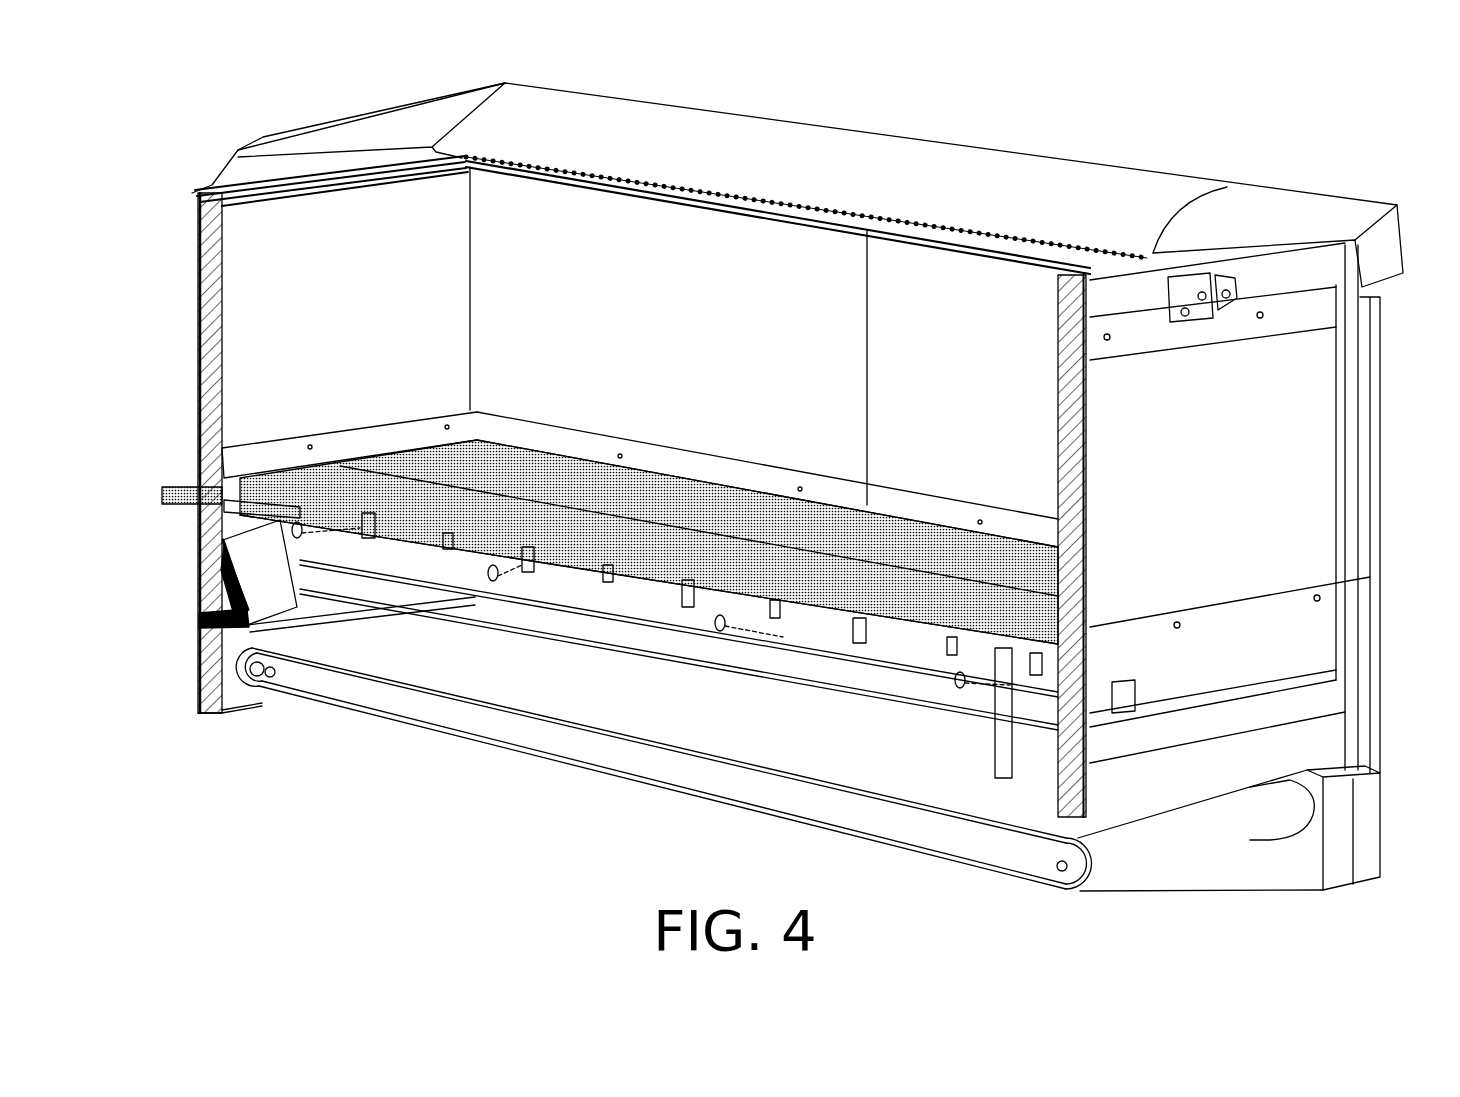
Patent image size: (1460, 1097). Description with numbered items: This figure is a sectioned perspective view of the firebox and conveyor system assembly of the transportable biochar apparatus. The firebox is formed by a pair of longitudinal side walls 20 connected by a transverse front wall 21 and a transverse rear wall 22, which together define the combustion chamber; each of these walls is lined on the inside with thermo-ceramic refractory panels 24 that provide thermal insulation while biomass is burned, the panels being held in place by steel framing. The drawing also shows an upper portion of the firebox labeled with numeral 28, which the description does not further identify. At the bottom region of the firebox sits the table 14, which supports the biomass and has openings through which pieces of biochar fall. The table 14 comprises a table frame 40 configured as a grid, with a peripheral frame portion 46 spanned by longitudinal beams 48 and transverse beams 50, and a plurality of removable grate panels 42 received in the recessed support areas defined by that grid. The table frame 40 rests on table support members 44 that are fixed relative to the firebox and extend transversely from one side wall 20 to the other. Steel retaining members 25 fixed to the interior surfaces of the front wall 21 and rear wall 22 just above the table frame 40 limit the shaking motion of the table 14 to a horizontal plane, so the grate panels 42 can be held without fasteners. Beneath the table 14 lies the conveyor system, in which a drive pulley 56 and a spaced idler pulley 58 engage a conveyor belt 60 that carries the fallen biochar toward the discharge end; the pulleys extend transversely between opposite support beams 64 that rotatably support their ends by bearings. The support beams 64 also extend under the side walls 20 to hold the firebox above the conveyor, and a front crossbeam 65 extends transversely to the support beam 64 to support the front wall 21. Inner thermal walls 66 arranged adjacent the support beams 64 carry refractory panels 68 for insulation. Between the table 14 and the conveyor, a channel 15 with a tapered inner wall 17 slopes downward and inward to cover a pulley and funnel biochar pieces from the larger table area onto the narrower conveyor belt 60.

The table 14 is at (652, 600).
The channel 15 is at (212, 600).
The tapered inner wall 17 is at (345, 617).
The longitudinal side wall 20 is at (738, 232).
The transverse front wall 21 is at (198, 343).
The transverse rear wall 22 is at (1192, 493).
The refractory panel 24 is at (321, 323).
The retaining member 25 is at (290, 468).
The roof panel 28 is at (913, 150).
The table frame 40 is at (1068, 680).
The grate panel 42 is at (407, 447).
The table support member 44 is at (285, 535).
The peripheral frame portion 46 is at (217, 497).
The longitudinal beam 48 is at (373, 480).
The transverse beam 50 is at (370, 540).
The drive pulley 56 is at (1072, 860).
The idler pulley 58 is at (262, 672).
The conveyor belt 60 is at (688, 722).
The support beam 64 is at (1373, 828).
The front crossbeam 65 is at (205, 690).
The inner thermal wall 66 is at (1337, 853).
The refractory panel 68 is at (1297, 857).